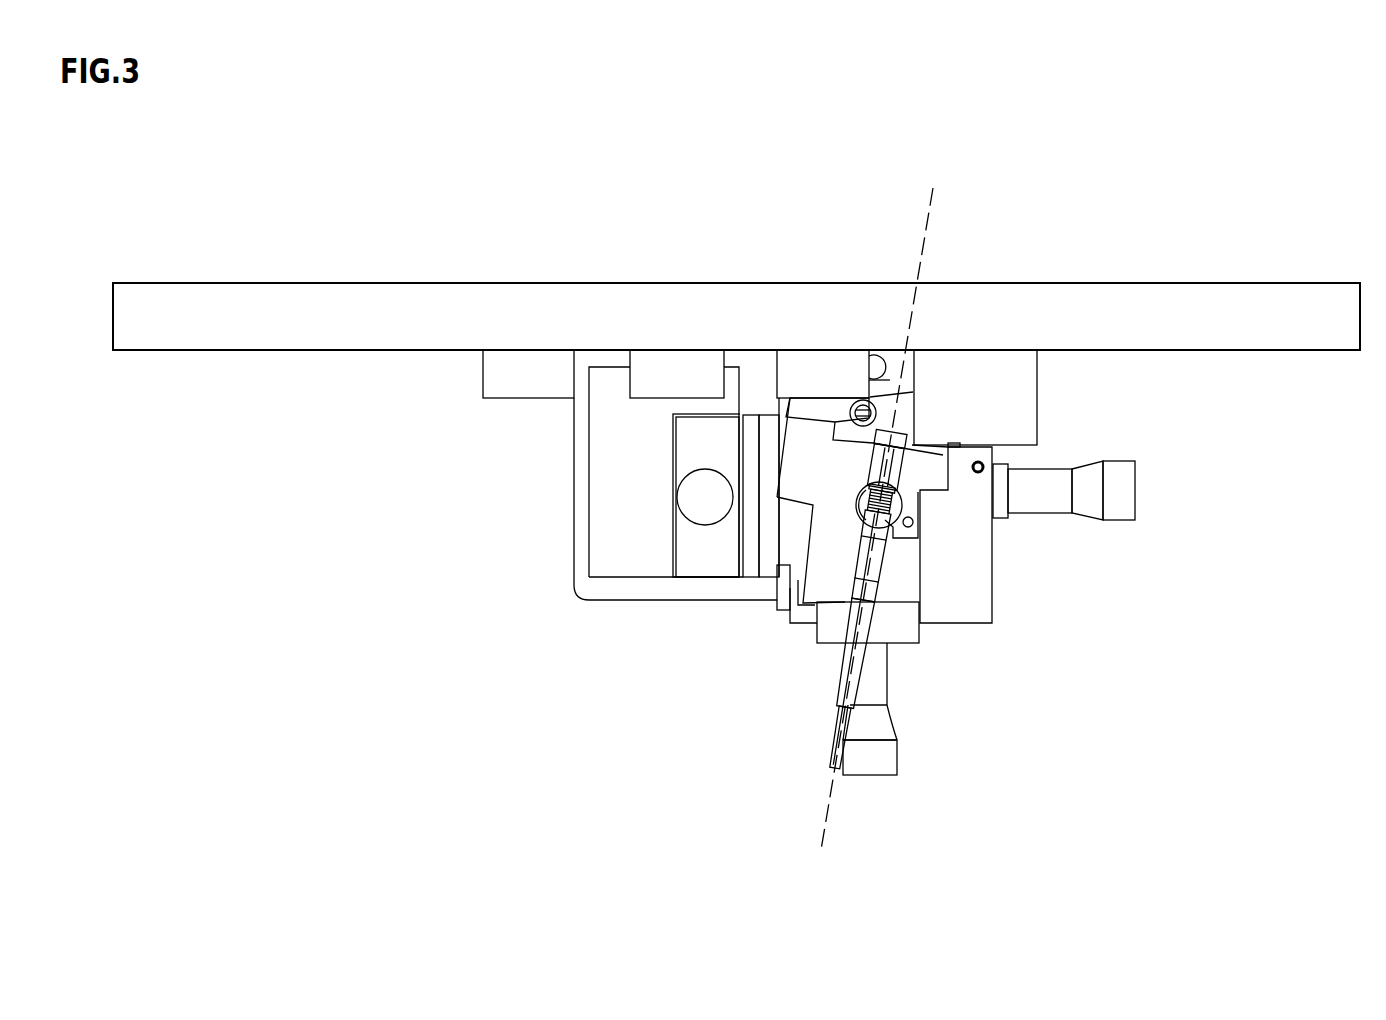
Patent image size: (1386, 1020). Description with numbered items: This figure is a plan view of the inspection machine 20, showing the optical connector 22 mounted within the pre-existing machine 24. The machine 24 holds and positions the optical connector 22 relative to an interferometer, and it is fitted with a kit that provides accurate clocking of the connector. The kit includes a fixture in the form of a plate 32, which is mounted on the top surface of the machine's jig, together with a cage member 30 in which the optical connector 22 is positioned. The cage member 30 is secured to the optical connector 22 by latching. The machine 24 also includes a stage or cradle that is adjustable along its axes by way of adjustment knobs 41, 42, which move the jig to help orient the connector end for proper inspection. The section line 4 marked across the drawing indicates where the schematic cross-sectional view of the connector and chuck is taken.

The inspection machine 20 is at (522, 220).
The machine 24 is at (616, 648).
The plate 32 is at (843, 428).
The cage member 30 is at (868, 468).
The optical connector 22 is at (890, 498).
The adjustment knob 41 is at (1138, 477).
The adjustment knob 42 is at (898, 757).
The section line 4— 4 is at (961, 545).